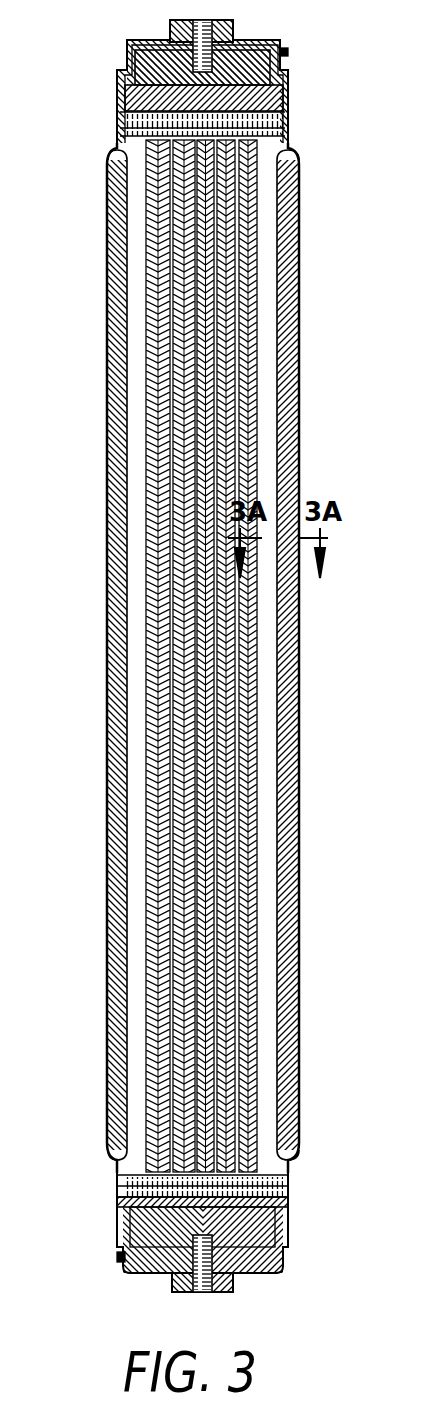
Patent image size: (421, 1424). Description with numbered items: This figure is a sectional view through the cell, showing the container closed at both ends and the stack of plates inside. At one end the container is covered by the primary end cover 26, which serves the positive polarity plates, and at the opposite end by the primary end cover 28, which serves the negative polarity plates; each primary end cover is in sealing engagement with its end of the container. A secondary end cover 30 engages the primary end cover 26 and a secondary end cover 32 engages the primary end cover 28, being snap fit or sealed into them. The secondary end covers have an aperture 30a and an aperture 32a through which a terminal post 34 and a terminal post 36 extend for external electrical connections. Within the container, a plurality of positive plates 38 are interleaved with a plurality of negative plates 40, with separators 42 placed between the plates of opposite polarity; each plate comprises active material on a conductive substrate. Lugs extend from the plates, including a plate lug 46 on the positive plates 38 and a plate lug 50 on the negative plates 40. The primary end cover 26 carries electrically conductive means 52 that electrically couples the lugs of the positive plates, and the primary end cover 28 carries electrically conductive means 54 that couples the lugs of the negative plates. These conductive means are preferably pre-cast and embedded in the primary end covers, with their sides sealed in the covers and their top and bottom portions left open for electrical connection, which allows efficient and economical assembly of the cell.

The primary end cover 26 is at (290, 1220).
The primary end cover 28 is at (290, 97).
The secondary end cover 30 is at (290, 1253).
The aperture 30a is at (228, 1290).
The secondary end cover 32 is at (121, 52).
The aperture 32a is at (170, 23).
The terminal post 34 is at (175, 1283).
The terminal post 36 is at (233, 28).
The positive plates 38 is at (125, 1185).
The negative plates 40 is at (150, 128).
The separators 42 is at (160, 270).
The plate lug 46 is at (122, 1258).
The plate lug 50 is at (290, 52).
The electrically conductive means 52 is at (140, 1222).
The electrically conductive means 54 is at (272, 88).